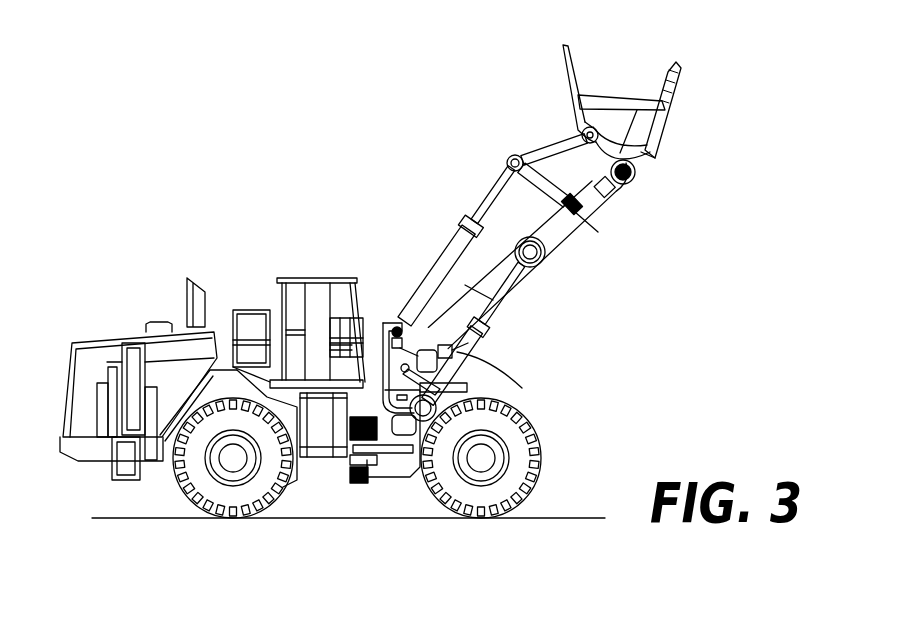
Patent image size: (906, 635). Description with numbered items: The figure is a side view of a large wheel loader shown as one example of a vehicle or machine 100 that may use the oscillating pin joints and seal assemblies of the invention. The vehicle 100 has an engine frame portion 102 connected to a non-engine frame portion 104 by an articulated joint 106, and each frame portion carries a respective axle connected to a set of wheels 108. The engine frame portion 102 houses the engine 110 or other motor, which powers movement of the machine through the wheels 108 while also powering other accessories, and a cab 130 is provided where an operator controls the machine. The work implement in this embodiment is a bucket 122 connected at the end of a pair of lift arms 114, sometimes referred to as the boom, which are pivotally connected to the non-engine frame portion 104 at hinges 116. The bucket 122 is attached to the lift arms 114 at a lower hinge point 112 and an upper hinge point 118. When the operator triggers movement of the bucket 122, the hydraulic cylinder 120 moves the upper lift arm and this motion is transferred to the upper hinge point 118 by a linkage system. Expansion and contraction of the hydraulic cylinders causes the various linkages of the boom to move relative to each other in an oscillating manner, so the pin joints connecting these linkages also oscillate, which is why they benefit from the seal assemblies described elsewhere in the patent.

The vehicle 100 is at (432, 94).
The engine frame portion 102 is at (133, 256).
The non-engine frame portion 104 is at (395, 470).
The articulated joint 106 is at (360, 490).
The wheels 108 is at (283, 488).
The engine 110 is at (127, 331).
The lower hinge point 112 is at (633, 178).
The lift arms 114 is at (437, 251).
The hinges 116 is at (457, 352).
The upper hinge point 118 is at (584, 94).
The hydraulic cylinder 120 is at (410, 303).
The bucket 122 is at (608, 102).
The cab 130 is at (312, 277).